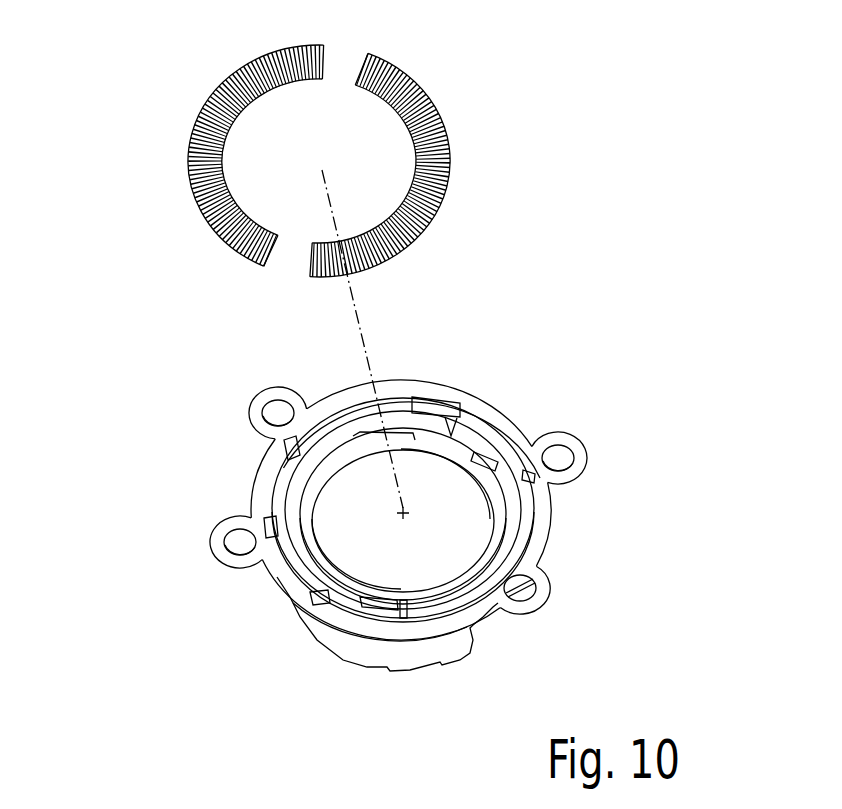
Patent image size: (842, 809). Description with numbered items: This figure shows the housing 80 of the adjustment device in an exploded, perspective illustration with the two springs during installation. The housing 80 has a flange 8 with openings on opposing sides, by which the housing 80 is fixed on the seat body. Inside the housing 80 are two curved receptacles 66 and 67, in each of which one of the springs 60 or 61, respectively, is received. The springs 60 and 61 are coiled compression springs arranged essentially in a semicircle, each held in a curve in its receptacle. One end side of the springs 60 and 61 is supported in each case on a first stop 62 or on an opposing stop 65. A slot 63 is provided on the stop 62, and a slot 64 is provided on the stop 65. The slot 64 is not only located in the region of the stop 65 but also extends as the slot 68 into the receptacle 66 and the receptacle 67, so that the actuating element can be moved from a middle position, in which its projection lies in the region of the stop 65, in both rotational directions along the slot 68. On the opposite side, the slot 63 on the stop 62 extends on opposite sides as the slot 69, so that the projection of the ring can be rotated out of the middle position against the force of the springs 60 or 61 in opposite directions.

The flange 8 is at (542, 507).
The spring 60 is at (438, 107).
The spring 61 is at (213, 103).
The first stop 62 is at (385, 598).
The slot 63 is at (388, 612).
The slot 64 is at (457, 412).
The opposing stop 65 is at (433, 407).
The curved receptacle 66 is at (513, 482).
The curved receptacle 67 is at (307, 470).
The slot 68 is at (483, 453).
The slot 69 is at (323, 602).
The housing 80 is at (200, 480).